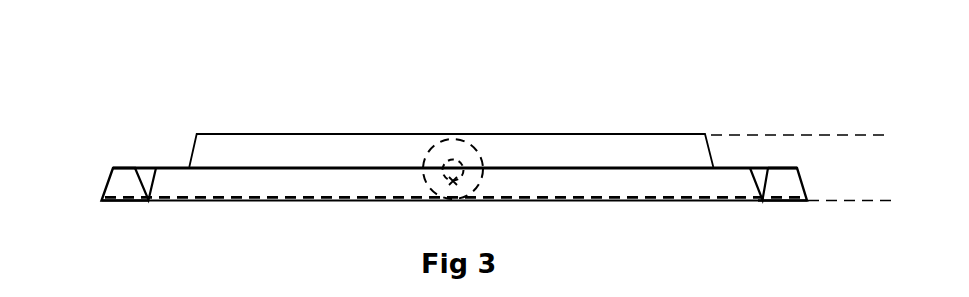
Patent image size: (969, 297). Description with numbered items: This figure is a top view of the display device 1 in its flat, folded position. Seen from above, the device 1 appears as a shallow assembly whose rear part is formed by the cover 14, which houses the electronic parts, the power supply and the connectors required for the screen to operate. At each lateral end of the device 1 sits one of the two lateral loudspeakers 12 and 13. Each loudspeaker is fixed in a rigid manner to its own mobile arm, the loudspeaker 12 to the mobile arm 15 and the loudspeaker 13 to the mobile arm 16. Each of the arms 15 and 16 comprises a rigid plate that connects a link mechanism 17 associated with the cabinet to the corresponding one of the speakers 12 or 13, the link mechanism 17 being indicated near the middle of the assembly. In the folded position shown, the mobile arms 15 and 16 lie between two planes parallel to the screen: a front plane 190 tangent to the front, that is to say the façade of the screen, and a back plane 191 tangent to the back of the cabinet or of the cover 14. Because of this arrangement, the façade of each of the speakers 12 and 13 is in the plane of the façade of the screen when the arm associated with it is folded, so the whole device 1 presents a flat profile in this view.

The display device 1 is at (146, 101).
The lateral loudspeaker 12 is at (132, 187).
The lateral loudspeaker 13 is at (790, 175).
The cover 14 is at (300, 140).
The mobile arm 15 is at (155, 167).
The mobile arm 16 is at (757, 168).
The link mechanism 17 is at (472, 148).
The front plane 190 is at (878, 198).
The back plane 191 is at (848, 130).